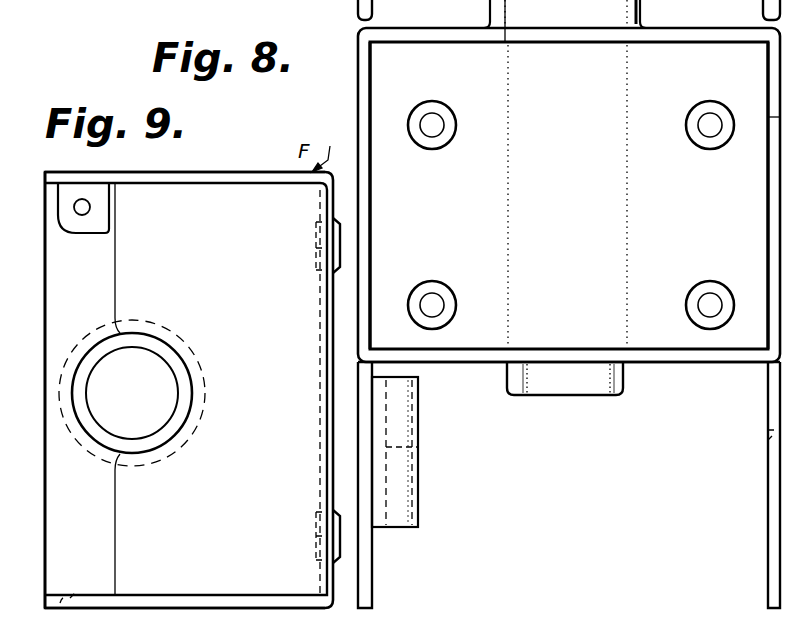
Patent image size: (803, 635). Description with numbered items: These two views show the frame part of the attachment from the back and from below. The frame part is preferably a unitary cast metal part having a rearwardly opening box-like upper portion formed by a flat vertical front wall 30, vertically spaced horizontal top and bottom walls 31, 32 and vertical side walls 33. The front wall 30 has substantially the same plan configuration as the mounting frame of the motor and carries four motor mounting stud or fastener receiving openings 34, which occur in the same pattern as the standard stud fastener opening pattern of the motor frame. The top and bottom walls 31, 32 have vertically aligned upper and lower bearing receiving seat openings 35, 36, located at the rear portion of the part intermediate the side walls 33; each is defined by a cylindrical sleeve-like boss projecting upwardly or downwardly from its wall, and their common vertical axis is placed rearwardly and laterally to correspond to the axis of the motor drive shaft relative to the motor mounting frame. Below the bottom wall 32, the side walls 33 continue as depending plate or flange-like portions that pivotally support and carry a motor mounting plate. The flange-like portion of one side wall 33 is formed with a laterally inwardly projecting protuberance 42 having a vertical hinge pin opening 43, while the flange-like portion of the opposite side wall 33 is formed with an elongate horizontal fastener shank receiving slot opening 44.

In FIG. 9, the front wall 30 is at (333, 392).
In FIG. 8, the front wall 30 is at (569, 195).
In FIG. 9, the top wall 31 is at (93, 285).
In FIG. 8, the top wall 31 is at (700, 10).
In FIG. 9, the bottom wall 32 is at (161, 385).
In FIG. 8, the bottom wall 32 is at (650, 363).
In FIG. 9, the side walls 33 is at (238, 172).
In FIG. 8, the side walls 33 is at (377, 220).
In FIG. 9, the motor mounting stud receiving openings 34 is at (318, 247).
In FIG. 8, the motor mounting stud receiving openings 34 is at (434, 300).
In FIG. 8, the upper bearing receiving seat opening 35 is at (508, 42).
In FIG. 9, the lower bearing receiving seat opening 36 is at (155, 365).
In FIG. 8, the lower bearing receiving seat opening 36 is at (537, 350).
In FIG. 9, the protuberance 42 is at (107, 230).
In FIG. 8, the protuberance 42 is at (418, 420).
In FIG. 9, the hinge pin opening 43 is at (90, 208).
In FIG. 8, the hinge pin opening 43 is at (418, 447).
In FIG. 9, the fastener shank receiving slot opening 44 is at (82, 597).
In FIG. 8, the fastener shank receiving slot opening 44 is at (768, 433).